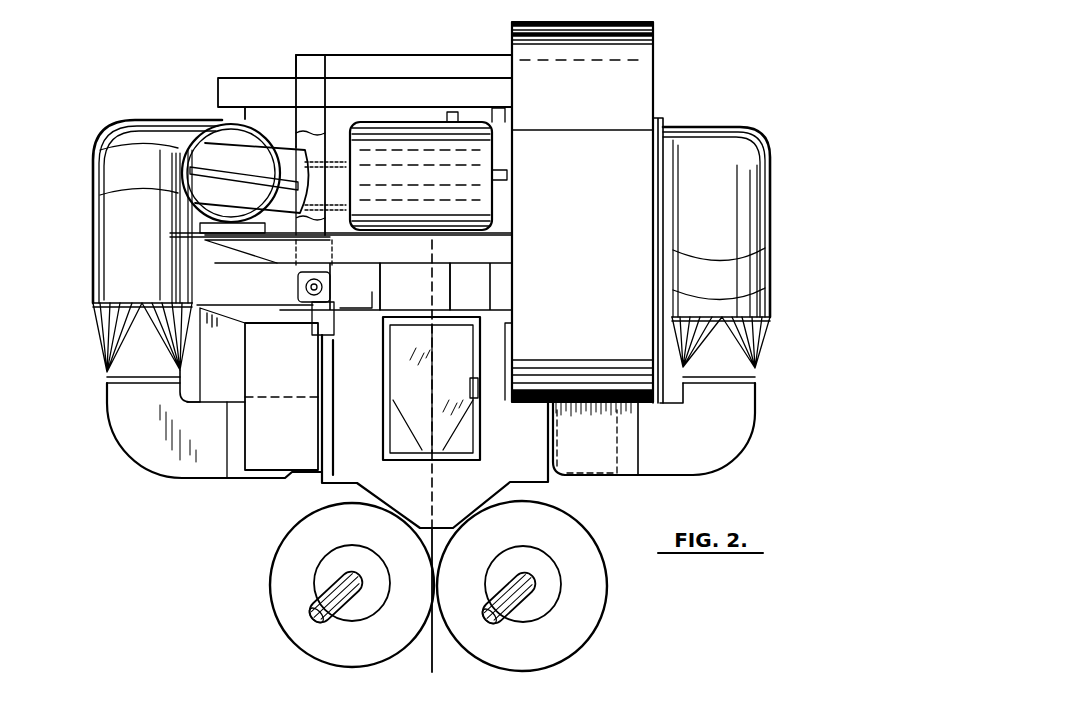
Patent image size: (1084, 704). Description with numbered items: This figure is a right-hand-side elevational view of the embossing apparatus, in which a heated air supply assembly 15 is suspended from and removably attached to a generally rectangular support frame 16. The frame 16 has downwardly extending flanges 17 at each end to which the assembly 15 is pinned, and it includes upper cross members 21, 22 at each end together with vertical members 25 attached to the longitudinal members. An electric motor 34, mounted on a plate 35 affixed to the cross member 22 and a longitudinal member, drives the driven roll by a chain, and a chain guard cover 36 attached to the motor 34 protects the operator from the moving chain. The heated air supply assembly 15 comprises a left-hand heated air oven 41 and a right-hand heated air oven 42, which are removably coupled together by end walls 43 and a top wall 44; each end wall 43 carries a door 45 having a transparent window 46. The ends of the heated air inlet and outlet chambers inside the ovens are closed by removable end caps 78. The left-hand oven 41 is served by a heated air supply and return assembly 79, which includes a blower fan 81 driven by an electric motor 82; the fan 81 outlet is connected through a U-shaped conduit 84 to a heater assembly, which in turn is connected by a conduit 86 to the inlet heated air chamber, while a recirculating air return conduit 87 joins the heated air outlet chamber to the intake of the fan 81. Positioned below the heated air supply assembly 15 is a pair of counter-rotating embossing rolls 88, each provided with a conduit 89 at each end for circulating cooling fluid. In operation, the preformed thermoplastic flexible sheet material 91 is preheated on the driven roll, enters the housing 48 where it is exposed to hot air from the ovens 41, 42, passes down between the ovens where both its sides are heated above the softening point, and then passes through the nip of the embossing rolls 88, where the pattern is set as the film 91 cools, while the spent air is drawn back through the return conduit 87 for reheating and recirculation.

The heated air supply assembly 15 is at (292, 495).
The support frame 16 is at (414, 46).
The flanges 17 is at (297, 268).
The upper cross member 21 is at (252, 88).
The upper cross member 22 is at (497, 254).
The vertical member 25 is at (322, 116).
The electric motor 34 is at (212, 138).
The plate 35 is at (197, 256).
The chain guard cover 36 is at (264, 168).
The left-hand heated air oven 41 is at (212, 495).
The right-hand heated air oven 42 is at (600, 493).
The end wall 43 is at (527, 449).
The top wall 44 is at (345, 306).
The door 45 is at (388, 418).
The transparent window 46 is at (407, 353).
The housing 48 is at (396, 275).
The end caps 78 is at (297, 369).
The heated air supply and return assembly 79 is at (78, 190).
The blower fan 81 is at (659, 118).
The electric motor 82 is at (432, 171).
The U-shaped conduit 84 is at (599, 216).
The conduit 86 is at (688, 50).
The recirculating air return conduit 87 is at (112, 262).
The embossing rolls 88 is at (620, 634).
The conduit 89 is at (330, 622).
The thermoplastic flexible sheet material 91 is at (437, 492).